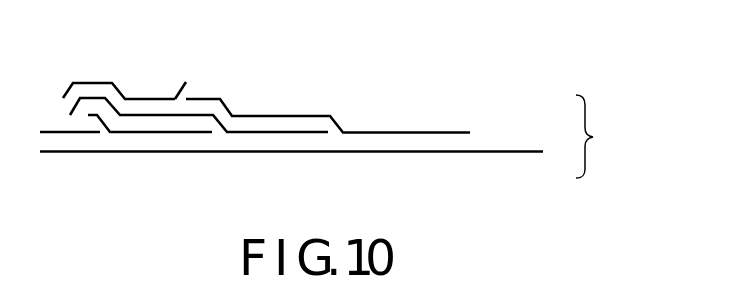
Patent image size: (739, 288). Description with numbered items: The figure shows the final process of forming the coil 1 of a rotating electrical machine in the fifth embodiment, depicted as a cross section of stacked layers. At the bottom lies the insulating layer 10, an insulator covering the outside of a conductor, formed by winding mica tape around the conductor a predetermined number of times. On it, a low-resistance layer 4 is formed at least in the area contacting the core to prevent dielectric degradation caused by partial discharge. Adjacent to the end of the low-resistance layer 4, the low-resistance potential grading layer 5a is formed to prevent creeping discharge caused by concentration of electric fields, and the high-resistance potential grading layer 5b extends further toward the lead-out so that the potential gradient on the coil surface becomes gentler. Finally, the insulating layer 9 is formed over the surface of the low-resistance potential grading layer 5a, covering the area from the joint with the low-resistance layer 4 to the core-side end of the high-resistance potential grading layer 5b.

The coil 1 is at (594, 136).
The low-resistance layer 4 is at (53, 131).
The low-resistance potential grading layer 5a is at (235, 133).
The high-resistance potential grading layer 5b is at (280, 115).
The insulating layer 9 is at (148, 98).
The insulating layer 10 is at (518, 151).